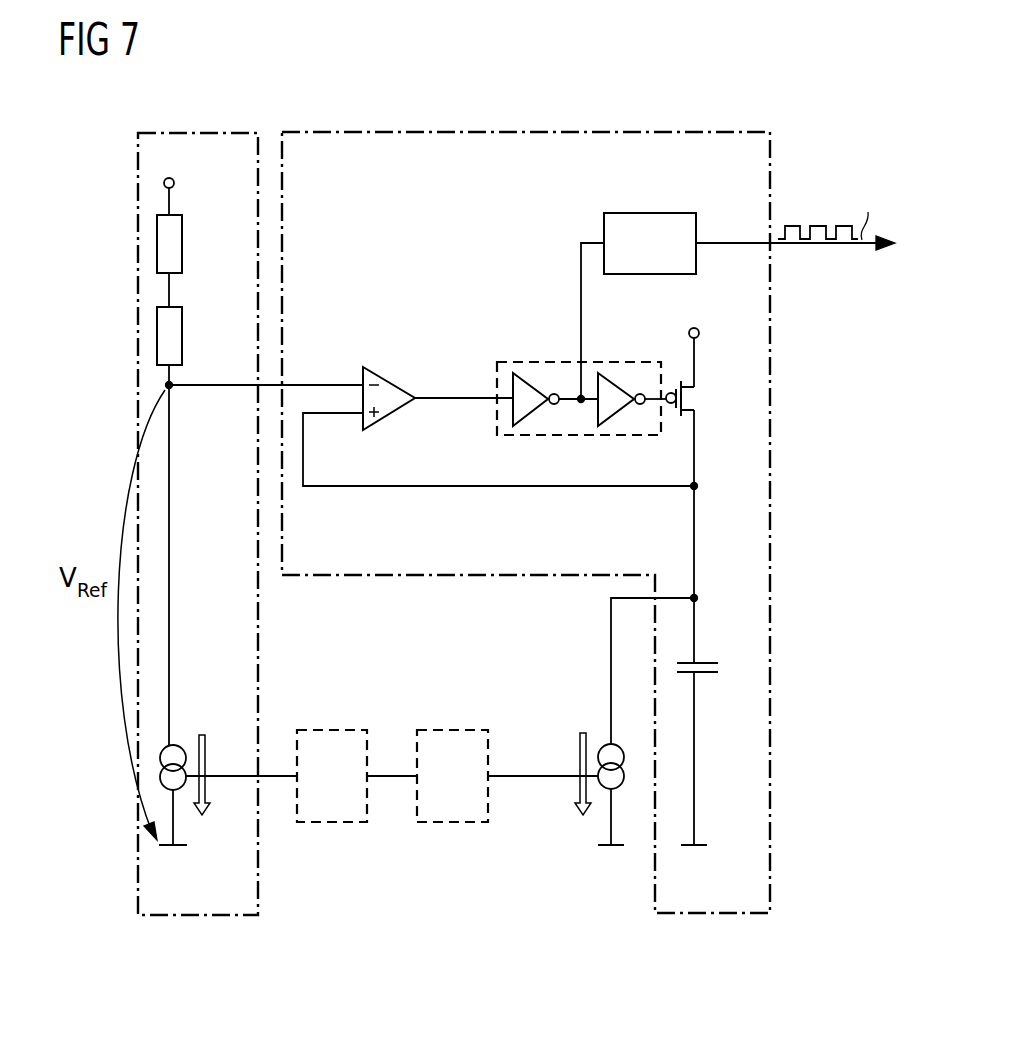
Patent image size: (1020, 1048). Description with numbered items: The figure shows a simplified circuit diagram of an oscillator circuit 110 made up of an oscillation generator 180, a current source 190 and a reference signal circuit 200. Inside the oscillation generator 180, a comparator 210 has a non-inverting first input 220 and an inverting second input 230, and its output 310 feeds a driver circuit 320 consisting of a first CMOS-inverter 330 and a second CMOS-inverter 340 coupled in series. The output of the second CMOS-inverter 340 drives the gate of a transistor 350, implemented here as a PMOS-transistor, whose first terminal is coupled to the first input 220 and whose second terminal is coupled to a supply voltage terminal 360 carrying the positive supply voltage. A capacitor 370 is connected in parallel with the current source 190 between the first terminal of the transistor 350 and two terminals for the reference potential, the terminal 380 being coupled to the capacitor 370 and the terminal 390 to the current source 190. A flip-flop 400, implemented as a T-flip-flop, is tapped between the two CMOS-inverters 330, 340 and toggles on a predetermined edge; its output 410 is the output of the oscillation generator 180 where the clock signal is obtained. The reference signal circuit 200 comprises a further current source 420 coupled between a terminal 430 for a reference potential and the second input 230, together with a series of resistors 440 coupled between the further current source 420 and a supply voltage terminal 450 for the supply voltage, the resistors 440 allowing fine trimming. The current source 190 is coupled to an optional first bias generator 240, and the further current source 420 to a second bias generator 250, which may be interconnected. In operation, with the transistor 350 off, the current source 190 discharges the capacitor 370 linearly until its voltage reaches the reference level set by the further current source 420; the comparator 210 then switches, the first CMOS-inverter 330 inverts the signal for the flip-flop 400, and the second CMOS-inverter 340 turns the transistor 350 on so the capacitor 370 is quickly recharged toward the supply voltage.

The oscillator circuit 110 is at (750, 107).
The oscillation generator 180 is at (772, 508).
The current source 190 is at (605, 745).
The reference signal circuit 200 is at (139, 398).
The comparator 210 is at (380, 373).
The first input 220 is at (362, 430).
The second input 230 is at (362, 383).
The first bias generator 240 is at (462, 730).
The second bias generator 250 is at (345, 730).
The output 310 is at (418, 395).
The driver circuit 320 is at (548, 362).
The first CMOS-inverter 330 is at (535, 412).
The second CMOS-inverter 340 is at (618, 412).
The transistor 350 is at (696, 398).
The supply voltage terminal 360 is at (689, 333).
The capacitor 370 is at (706, 660).
The terminal for reference potential 380 is at (697, 850).
The terminal for reference potential 390 is at (607, 850).
The flip-flop 400 is at (650, 213).
The output 410 is at (700, 240).
The further current source 420 is at (180, 748).
The terminal of a reference potential 430 is at (178, 850).
The resistors 440 is at (157, 247).
The supply voltage terminal 450 is at (164, 183).